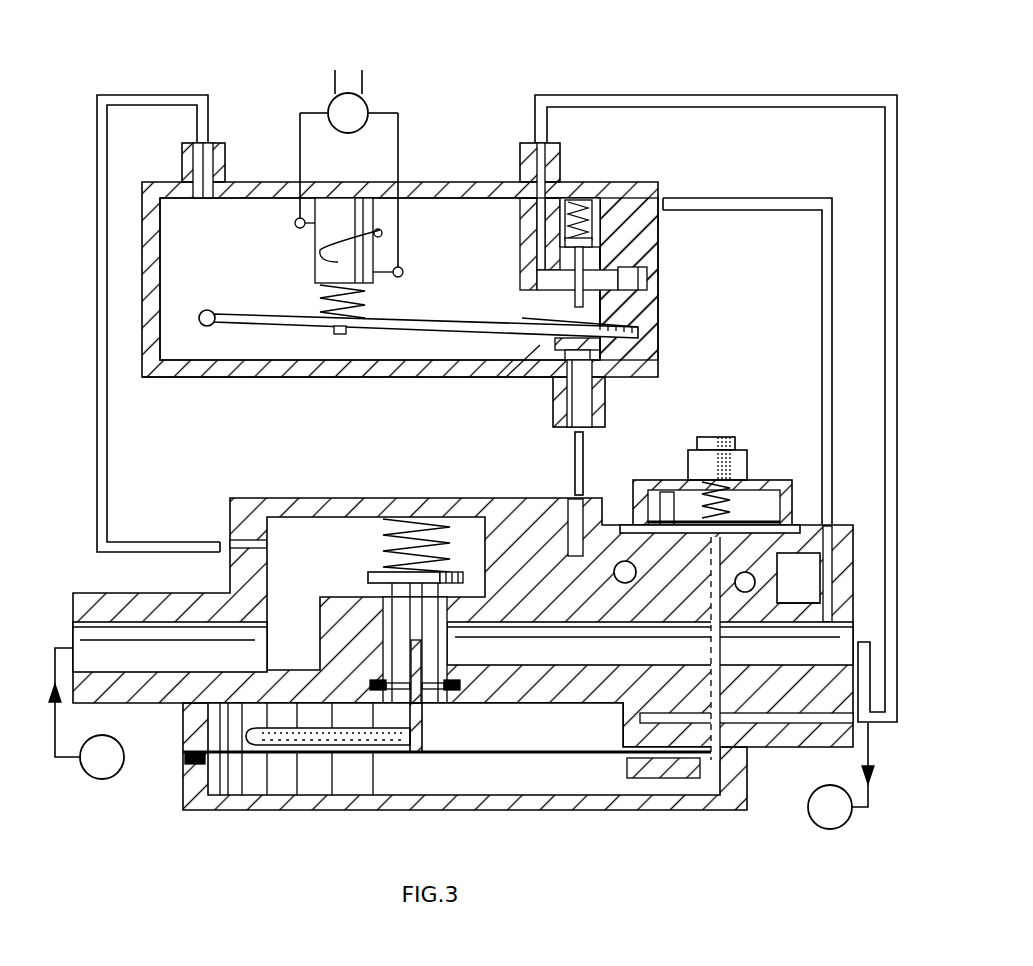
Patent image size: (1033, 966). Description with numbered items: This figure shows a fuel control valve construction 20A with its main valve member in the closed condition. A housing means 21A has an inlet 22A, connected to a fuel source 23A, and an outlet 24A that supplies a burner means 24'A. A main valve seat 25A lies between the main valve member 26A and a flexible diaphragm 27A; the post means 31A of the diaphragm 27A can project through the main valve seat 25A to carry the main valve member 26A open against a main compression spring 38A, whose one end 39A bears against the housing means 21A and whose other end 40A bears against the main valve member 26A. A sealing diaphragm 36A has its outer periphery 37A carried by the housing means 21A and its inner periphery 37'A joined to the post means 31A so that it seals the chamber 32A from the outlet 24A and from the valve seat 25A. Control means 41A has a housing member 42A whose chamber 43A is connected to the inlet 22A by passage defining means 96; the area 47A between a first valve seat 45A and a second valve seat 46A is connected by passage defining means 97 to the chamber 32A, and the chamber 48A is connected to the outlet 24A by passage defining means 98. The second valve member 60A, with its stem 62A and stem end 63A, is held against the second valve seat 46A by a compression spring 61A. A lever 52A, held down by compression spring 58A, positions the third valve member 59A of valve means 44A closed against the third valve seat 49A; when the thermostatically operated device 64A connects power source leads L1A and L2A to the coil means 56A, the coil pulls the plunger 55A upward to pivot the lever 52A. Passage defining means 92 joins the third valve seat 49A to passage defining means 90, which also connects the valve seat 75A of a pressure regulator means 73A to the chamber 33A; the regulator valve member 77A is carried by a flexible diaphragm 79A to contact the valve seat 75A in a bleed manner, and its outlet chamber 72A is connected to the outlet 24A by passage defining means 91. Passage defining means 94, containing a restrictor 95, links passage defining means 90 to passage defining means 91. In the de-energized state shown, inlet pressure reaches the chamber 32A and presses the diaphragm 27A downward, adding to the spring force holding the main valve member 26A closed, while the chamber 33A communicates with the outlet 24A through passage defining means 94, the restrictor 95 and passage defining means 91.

The fuel control valve construction 20A is at (545, 54).
The passage defining means 97 is at (742, 95).
The passage defining means 98 is at (762, 197).
The passage defining means 96 is at (97, 422).
The power source lead L1A is at (319, 131).
The power source lead L2A is at (379, 156).
The thermostatically operated device 64A is at (368, 105).
The control means 41A is at (243, 378).
The housing member 42A is at (376, 378).
The chamber 43A is at (245, 218).
The second valve member 60A is at (650, 233).
The area 47A is at (556, 282).
The first valve seat 45A is at (650, 292).
The chamber 48A is at (590, 202).
The compression spring 61A is at (562, 218).
The second valve seat 46A is at (595, 250).
The coil means 56A is at (322, 258).
The compression spring 58A is at (320, 304).
The lever 52A is at (400, 322).
The stem 62A is at (574, 300).
The plunger 55A is at (336, 333).
The end of stem 63A is at (602, 342).
The third valve seat 49A is at (607, 349).
The third valve member 59A is at (566, 388).
The valve means 44A is at (505, 378).
The passage defining means 92 is at (574, 455).
The housing means 21A is at (232, 510).
The outlet 24A is at (836, 680).
The one end of main compression spring 39A is at (447, 497).
The inlet 22A is at (116, 612).
The chamber 32A is at (580, 712).
The other end of main compression spring 40A is at (470, 574).
The main compression spring 38A is at (386, 542).
The main valve seat 25A is at (368, 580).
The main valve member 26A is at (440, 575).
The post means 31A is at (402, 620).
The outer periphery 37A is at (383, 686).
The sealing diaphragm 36A is at (442, 680).
The chamber 33A is at (579, 811).
The flexible diaphragm 27A is at (505, 753).
The inner periphery 37'A is at (457, 726).
The passage defining means 90 is at (745, 770).
The fuel source 23A is at (122, 780).
The burner means 24'A is at (840, 799).
The restrictor 95 is at (735, 648).
The passage defining means 94 is at (752, 592).
The valve seat 75A is at (770, 543).
The passage defining means 91 is at (798, 590).
The pressure regulator means 73A is at (758, 462).
The flexible diaphragm 79A is at (666, 500).
The valve member 77A is at (776, 518).
The outlet chamber 72A is at (792, 530).